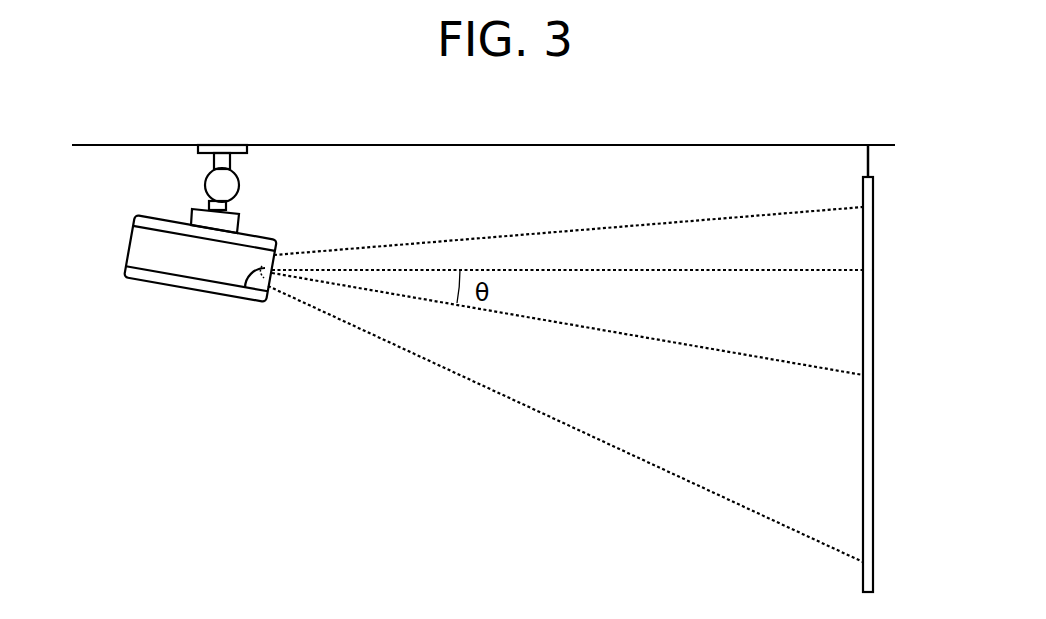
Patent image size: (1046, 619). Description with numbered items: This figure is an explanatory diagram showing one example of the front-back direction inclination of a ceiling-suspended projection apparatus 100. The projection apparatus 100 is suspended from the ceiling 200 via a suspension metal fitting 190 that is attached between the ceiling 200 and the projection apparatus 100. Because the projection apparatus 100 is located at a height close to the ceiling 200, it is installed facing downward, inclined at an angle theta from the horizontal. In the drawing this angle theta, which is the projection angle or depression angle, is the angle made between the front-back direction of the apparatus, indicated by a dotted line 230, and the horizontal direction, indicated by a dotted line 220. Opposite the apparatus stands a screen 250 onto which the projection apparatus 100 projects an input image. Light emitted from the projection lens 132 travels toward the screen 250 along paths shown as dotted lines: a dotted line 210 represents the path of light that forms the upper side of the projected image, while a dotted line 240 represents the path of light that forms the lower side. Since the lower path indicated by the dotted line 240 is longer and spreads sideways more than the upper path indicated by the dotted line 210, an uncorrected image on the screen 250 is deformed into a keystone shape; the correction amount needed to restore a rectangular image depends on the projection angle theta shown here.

The projection apparatus 100 is at (150, 257).
The projection lens 132 is at (245, 288).
The suspension metal fitting 190 is at (207, 183).
The ceiling 200 is at (403, 146).
The dotted line 210 is at (705, 218).
The dotted line 220 is at (703, 271).
The dotted line 230 is at (705, 352).
The dotted line 240 is at (705, 488).
The screen 250 is at (873, 225).